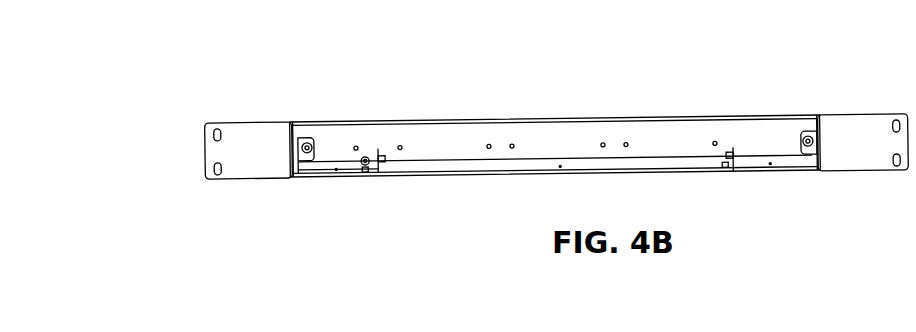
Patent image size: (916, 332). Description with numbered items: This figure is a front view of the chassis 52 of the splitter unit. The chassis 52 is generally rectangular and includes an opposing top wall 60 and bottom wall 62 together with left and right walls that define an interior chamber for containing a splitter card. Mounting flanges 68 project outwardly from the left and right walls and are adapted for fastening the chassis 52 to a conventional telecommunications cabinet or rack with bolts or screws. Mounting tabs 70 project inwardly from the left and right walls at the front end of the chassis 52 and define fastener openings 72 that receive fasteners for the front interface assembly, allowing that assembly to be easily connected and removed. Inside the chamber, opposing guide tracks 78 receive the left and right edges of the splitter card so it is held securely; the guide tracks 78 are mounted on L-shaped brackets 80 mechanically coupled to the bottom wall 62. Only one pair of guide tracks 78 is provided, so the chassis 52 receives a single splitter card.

The chassis 52 is at (832, 77).
The top wall 60 is at (507, 121).
The bottom wall 62 is at (591, 176).
The mounting flanges 68 is at (226, 180).
The mounting tabs 70 is at (303, 137).
The fastener openings 72 is at (311, 145).
The guide tracks 78 is at (380, 152).
The L-shaped brackets 80 is at (367, 175).